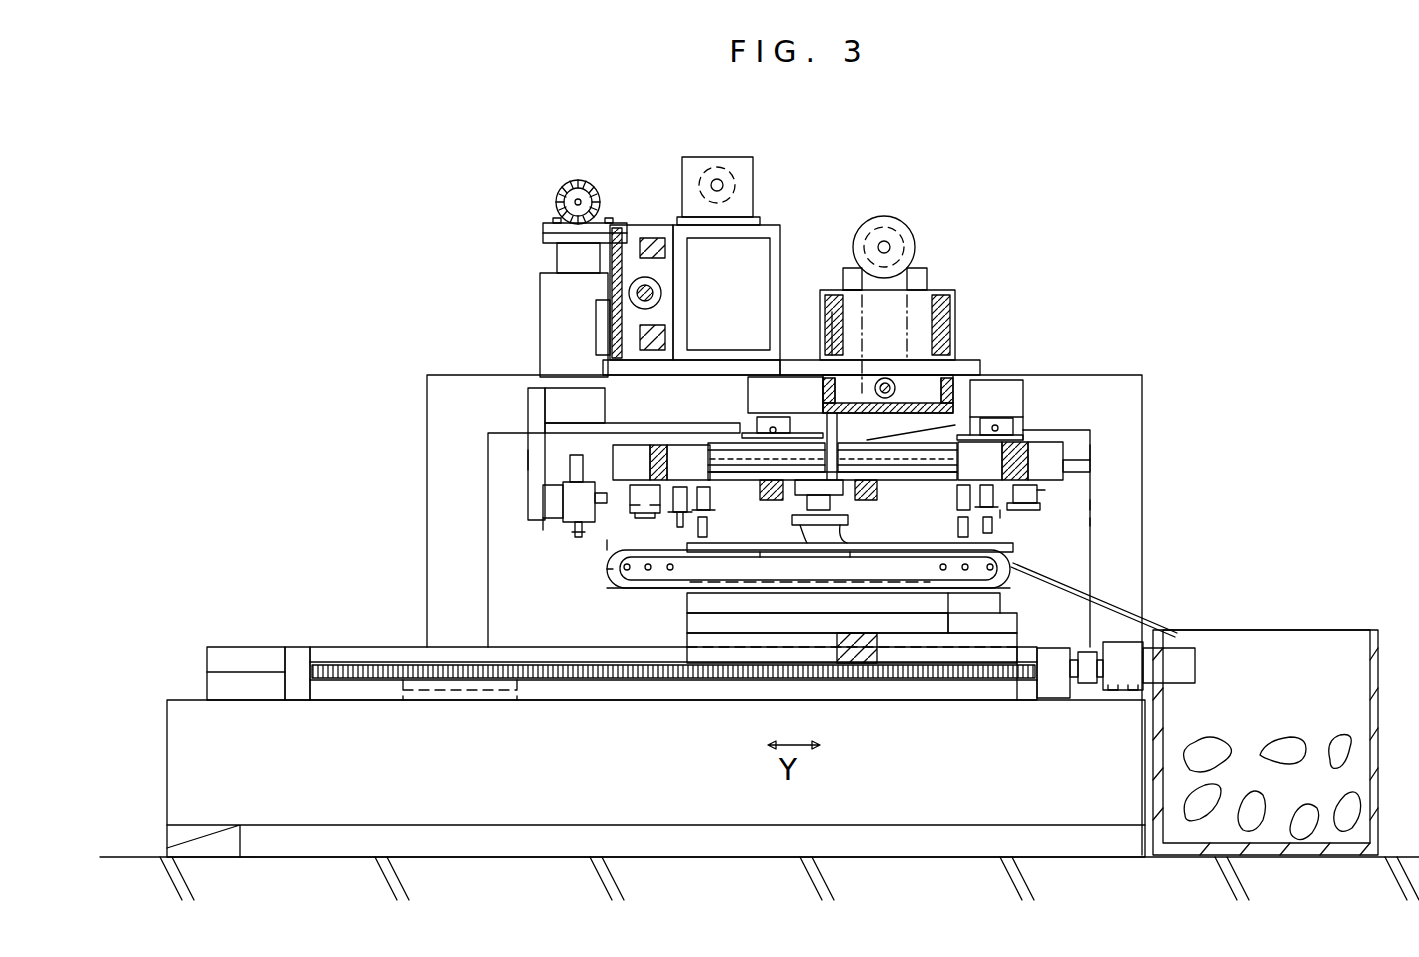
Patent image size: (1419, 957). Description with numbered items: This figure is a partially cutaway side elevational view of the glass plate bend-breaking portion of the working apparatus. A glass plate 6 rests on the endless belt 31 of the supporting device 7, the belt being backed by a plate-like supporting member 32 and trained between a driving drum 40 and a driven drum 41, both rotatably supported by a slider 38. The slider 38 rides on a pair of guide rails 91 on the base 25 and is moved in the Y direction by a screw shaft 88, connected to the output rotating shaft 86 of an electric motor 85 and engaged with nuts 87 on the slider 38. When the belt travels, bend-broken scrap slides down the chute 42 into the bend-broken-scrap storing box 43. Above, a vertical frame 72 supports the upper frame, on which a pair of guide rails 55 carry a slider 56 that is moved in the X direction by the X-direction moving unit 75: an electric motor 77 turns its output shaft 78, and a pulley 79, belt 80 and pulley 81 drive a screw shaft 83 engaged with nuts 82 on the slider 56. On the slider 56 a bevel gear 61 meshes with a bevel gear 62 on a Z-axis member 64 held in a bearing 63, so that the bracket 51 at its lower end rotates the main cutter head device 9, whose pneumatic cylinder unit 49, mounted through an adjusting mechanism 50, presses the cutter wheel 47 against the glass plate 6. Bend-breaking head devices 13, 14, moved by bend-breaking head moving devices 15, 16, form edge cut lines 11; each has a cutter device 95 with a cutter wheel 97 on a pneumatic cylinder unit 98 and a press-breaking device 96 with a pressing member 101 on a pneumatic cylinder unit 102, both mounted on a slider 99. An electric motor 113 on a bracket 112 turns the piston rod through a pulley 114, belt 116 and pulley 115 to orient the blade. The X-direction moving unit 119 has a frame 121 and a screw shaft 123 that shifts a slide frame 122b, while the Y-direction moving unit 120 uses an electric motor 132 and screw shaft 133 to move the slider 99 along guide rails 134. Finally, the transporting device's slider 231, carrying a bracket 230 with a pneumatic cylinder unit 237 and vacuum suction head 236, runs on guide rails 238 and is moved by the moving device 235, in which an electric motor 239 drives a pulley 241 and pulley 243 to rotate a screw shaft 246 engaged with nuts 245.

The glass plate 6 is at (726, 524).
The supporting device 7 is at (597, 588).
The main cutter head device 9 is at (545, 530).
The edge cut lines 11 is at (1092, 503).
The bend-breaking head device 13 is at (1089, 527).
The bend-breaking head device 14 is at (620, 536).
The bend-breaking head moving device 15 is at (1063, 425).
The bend-breaking head moving device 16 is at (595, 441).
The base 25 is at (905, 815).
The endless belt 31 is at (658, 585).
The plate-like supporting member 32 is at (752, 560).
The slider 38 is at (935, 640).
The driving drum 40 is at (1005, 600).
The driven drum 41 is at (620, 585).
The chute 42 is at (1162, 625).
The bend-broken-scrap storing box 43 is at (1378, 650).
The cutter wheel 47 is at (572, 535).
The pneumatic cylinder unit 49 is at (555, 496).
The adjusting mechanism 50 is at (543, 514).
The bracket 51 is at (530, 458).
The guide rails 55 is at (645, 240).
The slider 56 is at (620, 330).
The bevel gear 61 is at (585, 190).
The bevel gear 62 is at (575, 188).
The bearing 63 is at (540, 318).
The Z-axis member 64 is at (560, 268).
The vertical frame 72 is at (427, 492).
The X-direction moving unit 75 is at (762, 161).
The electric motor 77 is at (740, 157).
The output shaft 78 is at (735, 186).
The pulley 79 is at (708, 158).
The belt 80 is at (678, 230).
The pulley 81 is at (665, 300).
The nuts 82 is at (620, 280).
The screw shaft 83 is at (670, 280).
The electric motor 85 is at (1195, 665).
The output rotating shaft 86 is at (1088, 698).
The nuts 87 is at (860, 698).
The screw shaft 88 is at (358, 690).
The guide rails 91 is at (342, 647).
The cutter device 95 is at (1007, 521).
The press-breaking device 96 is at (943, 522).
The cutter wheel 97 is at (1018, 590).
The pneumatic cylinder unit 98 is at (705, 492).
The slider 99 is at (820, 423).
The pressing member 101 is at (850, 565).
The pneumatic cylinder unit 102 is at (686, 450).
The bracket 112 is at (1063, 468).
The electric motor 113 is at (640, 512).
The pulley 114 is at (1025, 500).
The pulley 115 is at (960, 592).
The belt 116 is at (1000, 445).
The X-direction moving unit 119 is at (985, 400).
The Y-direction moving unit 120 is at (1100, 452).
The frame 121 is at (760, 422).
The slide frame 122b is at (980, 420).
The screw shaft 123 is at (1000, 420).
The electric motor 132 is at (636, 445).
The screw shaft 133 is at (800, 515).
The guide rails 134 is at (882, 442).
The bracket 230 is at (782, 407).
The slider 231 is at (958, 400).
The moving device 235 is at (918, 227).
The vacuum suction head 236 is at (850, 569).
The pneumatic cylinder unit 237 is at (788, 569).
The guide rails 238 is at (920, 372).
The electric motor 239 is at (885, 216).
The pulley 241 is at (858, 232).
The pulley 243 is at (887, 341).
The nuts 245 is at (832, 312).
The screw shaft 246 is at (838, 290).